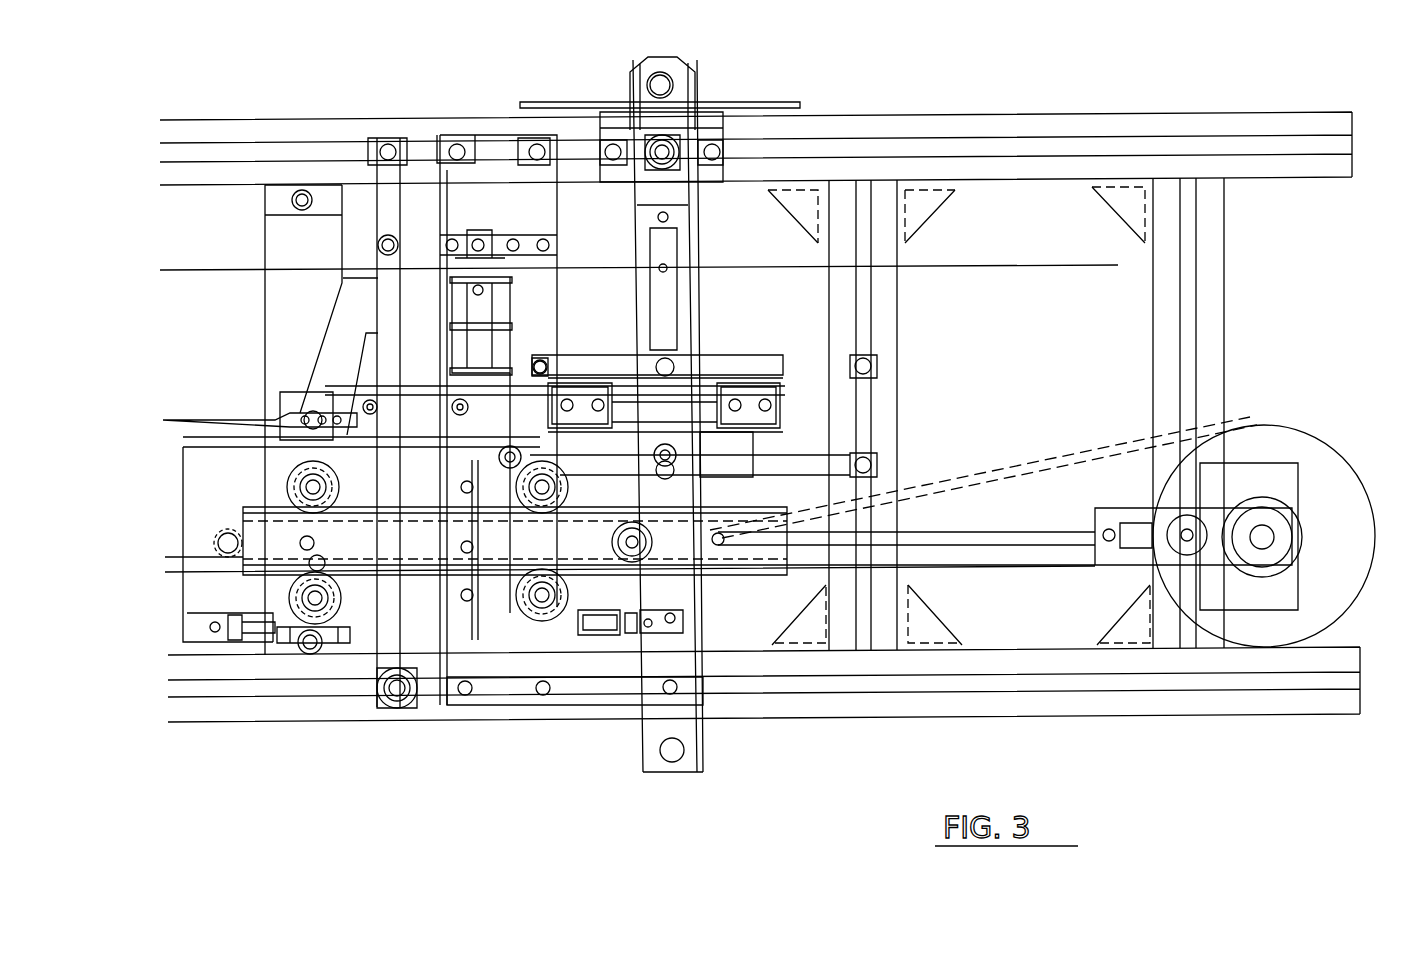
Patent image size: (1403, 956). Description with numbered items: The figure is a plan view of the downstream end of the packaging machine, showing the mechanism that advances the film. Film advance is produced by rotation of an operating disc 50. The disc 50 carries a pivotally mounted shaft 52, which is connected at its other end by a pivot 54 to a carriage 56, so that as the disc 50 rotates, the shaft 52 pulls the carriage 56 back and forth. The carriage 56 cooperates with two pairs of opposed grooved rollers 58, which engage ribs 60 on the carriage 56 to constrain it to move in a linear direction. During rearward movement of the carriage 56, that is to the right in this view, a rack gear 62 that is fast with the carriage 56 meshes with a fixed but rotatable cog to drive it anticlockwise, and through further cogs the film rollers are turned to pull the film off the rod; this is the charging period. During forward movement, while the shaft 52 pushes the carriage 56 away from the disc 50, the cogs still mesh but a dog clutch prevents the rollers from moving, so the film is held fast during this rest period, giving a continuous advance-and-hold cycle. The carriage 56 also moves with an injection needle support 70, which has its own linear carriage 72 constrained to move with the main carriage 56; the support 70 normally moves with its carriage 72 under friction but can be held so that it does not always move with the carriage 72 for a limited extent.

The operating disc 50 is at (1313, 462).
The shaft 52 is at (1082, 470).
The pivot 54 is at (719, 546).
The carriage 56 is at (773, 575).
The grooved rollers 58 is at (285, 484).
The ribs 60 is at (243, 505).
The rack gear 62 is at (610, 637).
The injection needle support 70 is at (772, 383).
The linear carriage 72 is at (722, 383).